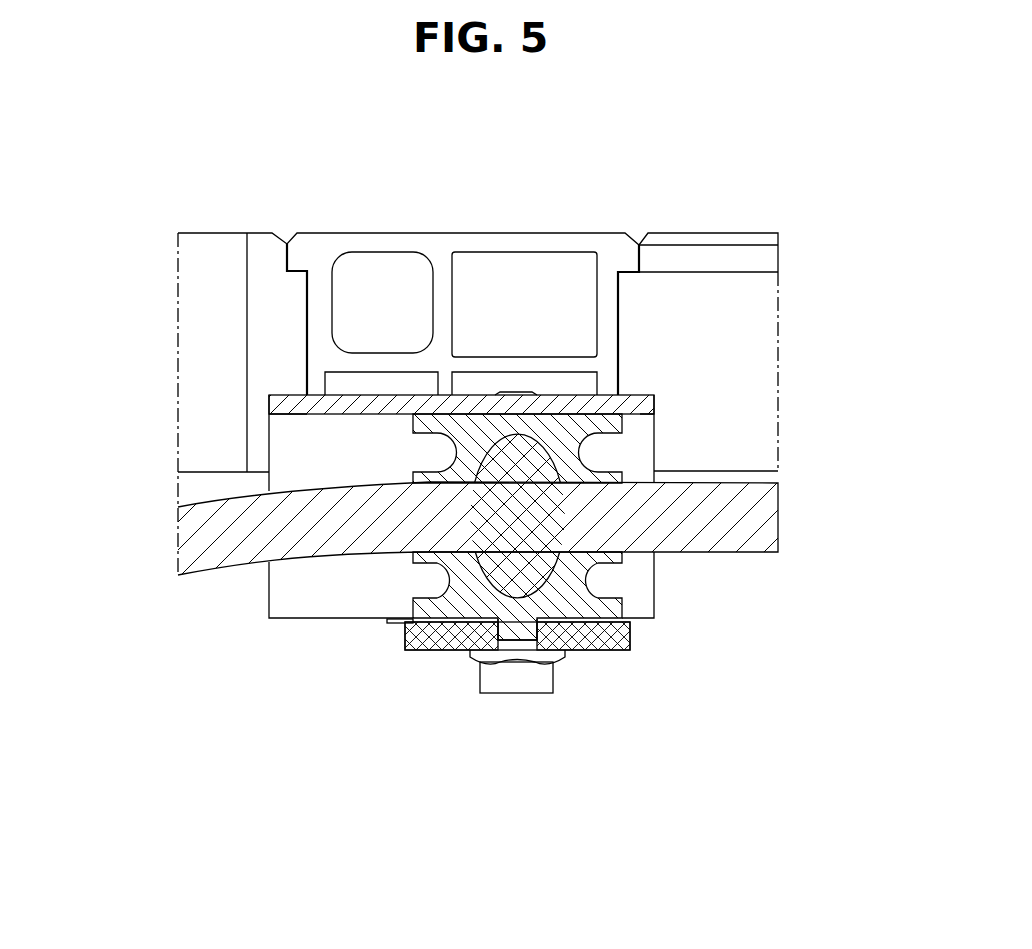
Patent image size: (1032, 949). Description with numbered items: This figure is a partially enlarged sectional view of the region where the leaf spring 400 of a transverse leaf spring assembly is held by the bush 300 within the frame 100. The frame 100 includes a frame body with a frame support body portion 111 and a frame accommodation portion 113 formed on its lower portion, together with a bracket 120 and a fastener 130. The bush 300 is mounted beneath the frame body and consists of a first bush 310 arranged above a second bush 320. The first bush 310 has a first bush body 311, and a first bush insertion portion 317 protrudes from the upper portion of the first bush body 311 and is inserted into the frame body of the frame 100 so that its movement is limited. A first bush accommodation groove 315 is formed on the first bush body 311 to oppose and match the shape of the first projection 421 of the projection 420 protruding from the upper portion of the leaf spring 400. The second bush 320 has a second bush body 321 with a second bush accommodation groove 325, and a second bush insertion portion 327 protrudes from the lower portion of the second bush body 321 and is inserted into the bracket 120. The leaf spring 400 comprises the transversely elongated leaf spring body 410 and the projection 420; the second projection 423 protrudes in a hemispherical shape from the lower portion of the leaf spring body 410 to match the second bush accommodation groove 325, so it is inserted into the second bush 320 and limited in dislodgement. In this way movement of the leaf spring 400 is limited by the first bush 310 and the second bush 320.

The frame 100 is at (404, 433).
The frame support body portion 111 is at (527, 262).
The frame accommodation portion 113 is at (343, 416).
The bracket 120 is at (412, 637).
The fastener 130 is at (497, 683).
The bush 300 is at (594, 580).
The first bush 310 is at (594, 418).
The first bush body 311 is at (560, 425).
The first bush accommodation groove 315 is at (654, 396).
The first bush insertion portion 317 is at (523, 392).
The second bush 320 is at (559, 714).
The second bush body 321 is at (562, 612).
The second bush accommodation groove 325 is at (600, 600).
The second bush insertion portion 327 is at (543, 700).
The leaf spring 400 is at (548, 522).
The leaf spring body 410 is at (748, 521).
The projection 420 is at (665, 519).
The first projection 421 is at (545, 468).
The second projection 423 is at (525, 577).